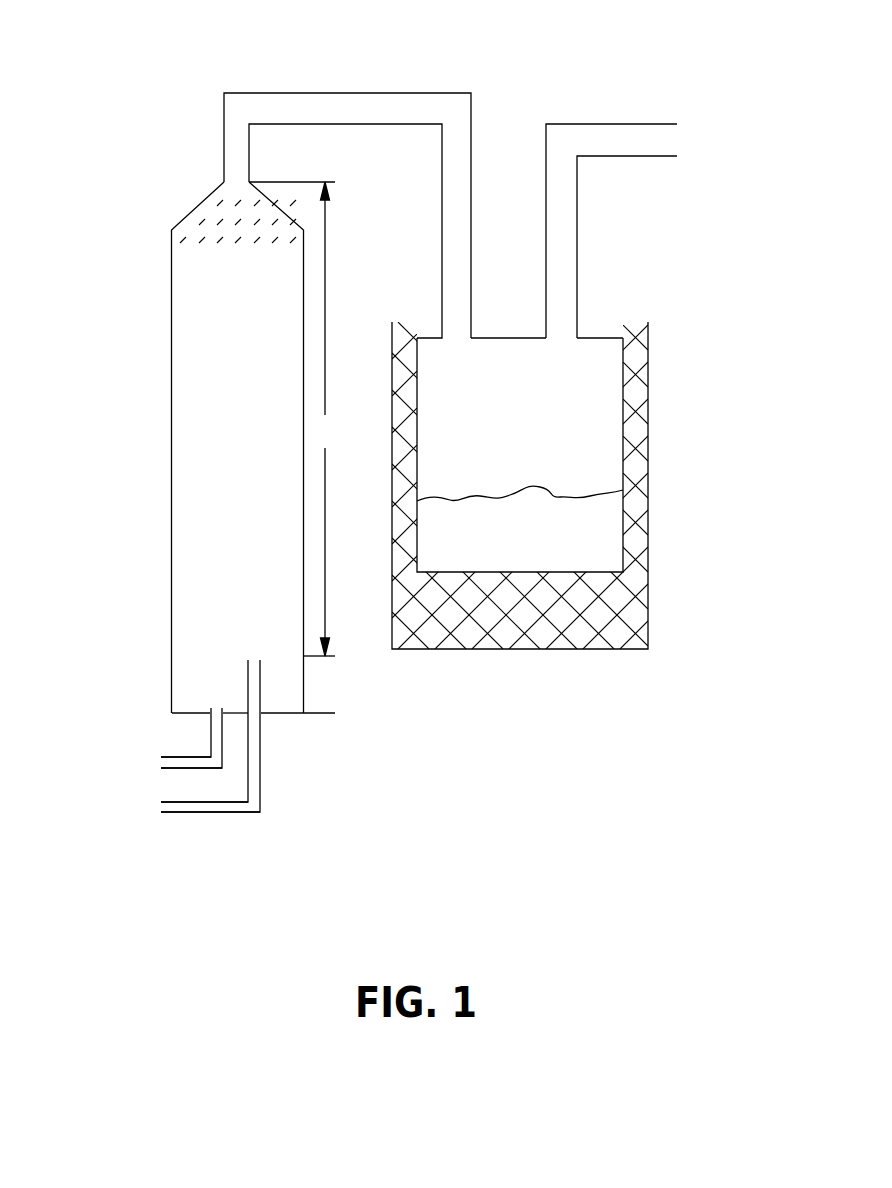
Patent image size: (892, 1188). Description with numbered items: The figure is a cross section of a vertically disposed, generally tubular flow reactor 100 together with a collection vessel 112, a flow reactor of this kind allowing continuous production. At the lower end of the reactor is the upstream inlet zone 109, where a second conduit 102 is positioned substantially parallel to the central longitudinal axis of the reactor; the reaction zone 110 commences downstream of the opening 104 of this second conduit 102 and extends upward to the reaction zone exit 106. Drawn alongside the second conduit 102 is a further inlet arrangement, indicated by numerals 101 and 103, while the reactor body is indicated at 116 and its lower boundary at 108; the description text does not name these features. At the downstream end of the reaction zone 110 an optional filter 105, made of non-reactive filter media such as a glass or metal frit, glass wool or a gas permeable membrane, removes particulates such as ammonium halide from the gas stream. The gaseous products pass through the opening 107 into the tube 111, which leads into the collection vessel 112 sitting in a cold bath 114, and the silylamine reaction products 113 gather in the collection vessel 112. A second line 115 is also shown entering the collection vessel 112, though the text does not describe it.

The flow reactor 100 is at (82, 293).
The first inlet 101 is at (173, 756).
The second conduit 102 is at (175, 815).
The first inlet tube 103 is at (215, 708).
The opening of the second conduit 104 is at (253, 657).
The filter 105 is at (215, 215).
The reaction zone exit 106 is at (207, 195).
The opening 107 is at (238, 178).
The base plate 108 is at (283, 713).
The upstream inlet zone 109 is at (323, 676).
The reaction zone 110 is at (325, 419).
The tube 111 is at (382, 92).
The collection vessel 112 is at (630, 340).
The silylamine reaction products 113 is at (603, 520).
The cold bath 114 is at (648, 423).
The exhaust pipe 115 is at (640, 124).
The reactor tube 116 is at (171, 467).